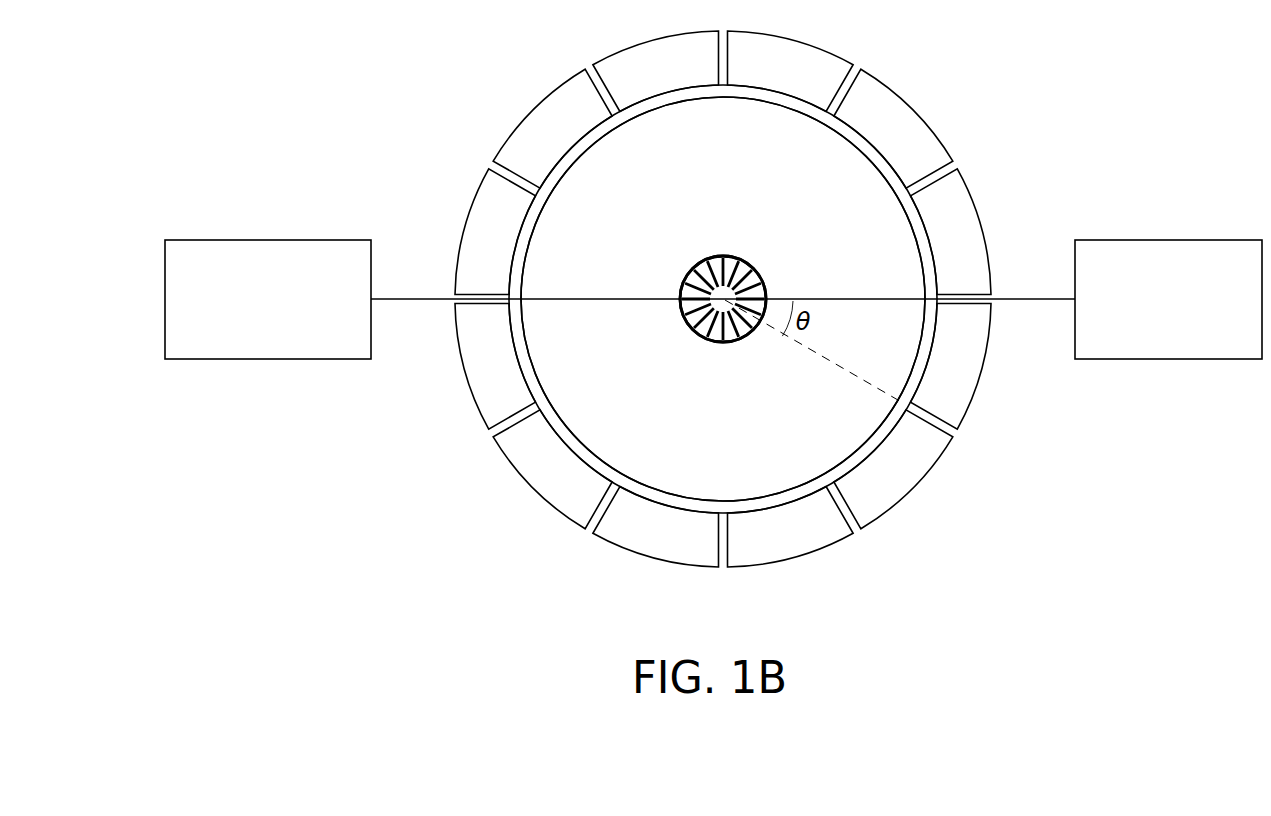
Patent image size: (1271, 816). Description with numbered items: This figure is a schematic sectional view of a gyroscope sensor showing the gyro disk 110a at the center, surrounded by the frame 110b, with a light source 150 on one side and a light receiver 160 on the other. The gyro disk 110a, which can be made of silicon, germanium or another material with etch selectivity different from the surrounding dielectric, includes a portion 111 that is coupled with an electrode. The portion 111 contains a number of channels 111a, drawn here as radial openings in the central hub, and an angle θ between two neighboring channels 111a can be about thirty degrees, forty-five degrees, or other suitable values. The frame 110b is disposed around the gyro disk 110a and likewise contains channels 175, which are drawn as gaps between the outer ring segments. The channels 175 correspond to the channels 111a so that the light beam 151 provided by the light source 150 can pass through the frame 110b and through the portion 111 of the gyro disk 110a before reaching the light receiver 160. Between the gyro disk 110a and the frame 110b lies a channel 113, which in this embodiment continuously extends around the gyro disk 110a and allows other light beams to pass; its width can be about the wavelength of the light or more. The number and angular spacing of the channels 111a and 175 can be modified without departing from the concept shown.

The gyro disk 110a is at (825, 172).
The frame 110b is at (543, 118).
The portion 111 is at (690, 270).
The channels 111a is at (766, 292).
The channel 113 is at (592, 143).
The light source 150 is at (1158, 331).
The light beam 151 is at (416, 298).
The light receiver 160 is at (248, 331).
The channels 175 is at (1000, 280).